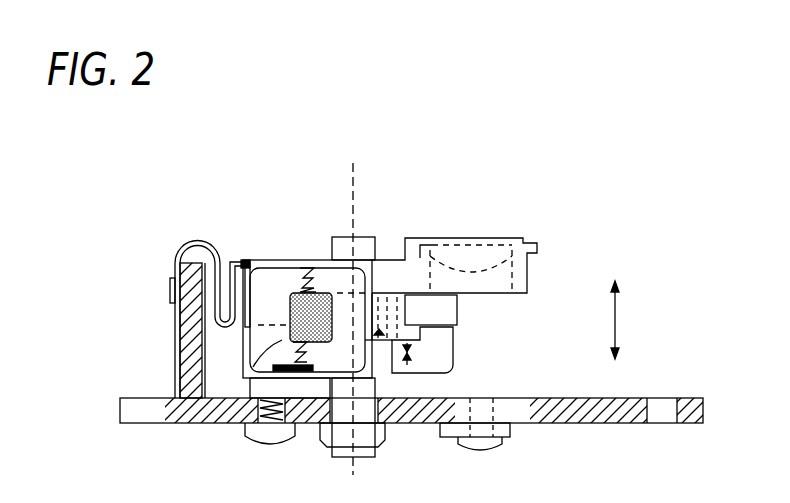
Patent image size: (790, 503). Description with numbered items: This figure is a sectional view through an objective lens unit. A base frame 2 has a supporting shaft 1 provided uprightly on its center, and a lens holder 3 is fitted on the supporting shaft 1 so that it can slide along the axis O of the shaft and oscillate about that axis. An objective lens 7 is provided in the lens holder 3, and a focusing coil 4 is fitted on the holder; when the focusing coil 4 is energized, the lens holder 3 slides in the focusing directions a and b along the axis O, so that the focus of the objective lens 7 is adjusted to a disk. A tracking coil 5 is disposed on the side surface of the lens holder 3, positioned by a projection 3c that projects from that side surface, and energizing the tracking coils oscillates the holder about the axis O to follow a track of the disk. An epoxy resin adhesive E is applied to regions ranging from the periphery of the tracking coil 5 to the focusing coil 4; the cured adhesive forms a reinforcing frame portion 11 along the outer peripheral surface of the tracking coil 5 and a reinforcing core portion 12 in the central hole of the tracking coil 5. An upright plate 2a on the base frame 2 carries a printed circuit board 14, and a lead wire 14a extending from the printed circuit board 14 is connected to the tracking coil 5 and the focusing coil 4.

The supporting shaft 1 is at (340, 238).
The base frame 2 is at (552, 422).
The upright plate 2a is at (190, 360).
The lens holder 3 is at (386, 260).
The projections 3c is at (288, 343).
The focusing coil 4 is at (398, 312).
The tracking coils 5 is at (438, 349).
The objective lens 7 is at (469, 250).
The reinforcing frame portions 11 is at (250, 262).
The reinforcing core portions 12 is at (329, 292).
The printed circuit board 14 is at (176, 310).
The lead wire 14a is at (192, 243).
The epoxy resin adhesive E is at (286, 252).
The axis O is at (356, 176).
The focusing direction a is at (623, 313).
The focusing direction b is at (623, 351).